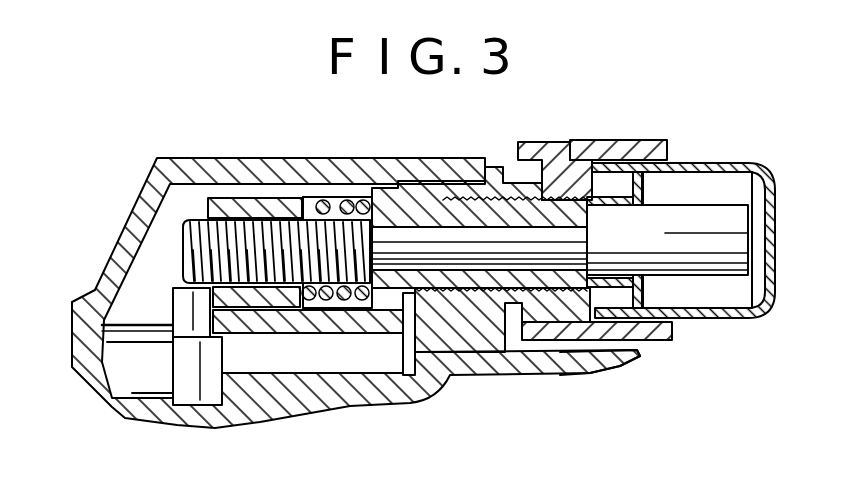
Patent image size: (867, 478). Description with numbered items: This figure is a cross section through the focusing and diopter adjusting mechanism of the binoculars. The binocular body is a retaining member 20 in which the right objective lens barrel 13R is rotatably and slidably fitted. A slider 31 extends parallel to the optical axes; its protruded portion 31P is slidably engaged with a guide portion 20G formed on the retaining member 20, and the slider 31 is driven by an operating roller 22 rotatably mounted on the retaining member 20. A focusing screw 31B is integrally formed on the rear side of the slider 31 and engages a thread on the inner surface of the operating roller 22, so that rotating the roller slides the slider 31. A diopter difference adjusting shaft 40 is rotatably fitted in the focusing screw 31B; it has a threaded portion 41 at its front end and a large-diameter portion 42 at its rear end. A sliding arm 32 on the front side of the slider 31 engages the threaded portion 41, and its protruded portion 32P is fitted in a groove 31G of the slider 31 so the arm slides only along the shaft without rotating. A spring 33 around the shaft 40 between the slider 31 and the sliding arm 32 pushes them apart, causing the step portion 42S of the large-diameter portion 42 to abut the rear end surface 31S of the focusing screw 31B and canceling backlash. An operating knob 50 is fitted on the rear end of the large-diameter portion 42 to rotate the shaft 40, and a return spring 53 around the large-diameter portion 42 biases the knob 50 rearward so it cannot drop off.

The right objective lens barrel 13R is at (125, 377).
The retaining member 20 is at (467, 178).
The guide portion 20G is at (288, 380).
The operating roller 22 is at (627, 140).
The slider 31 is at (383, 190).
The focusing screw 31B is at (557, 193).
The groove 31G is at (258, 300).
The protruded portion 31P is at (406, 378).
The rear end surface 31S is at (596, 222).
The sliding arm 32 is at (230, 198).
The protruded portion 32P is at (340, 334).
The spring 33 is at (307, 200).
The diopter difference adjusting shaft 40 is at (427, 237).
The threaded portion 41 is at (342, 200).
The large-diameter portion 42 is at (700, 213).
The step portion 42S is at (586, 276).
The operating knob 50 is at (750, 162).
The return spring 53 is at (588, 192).